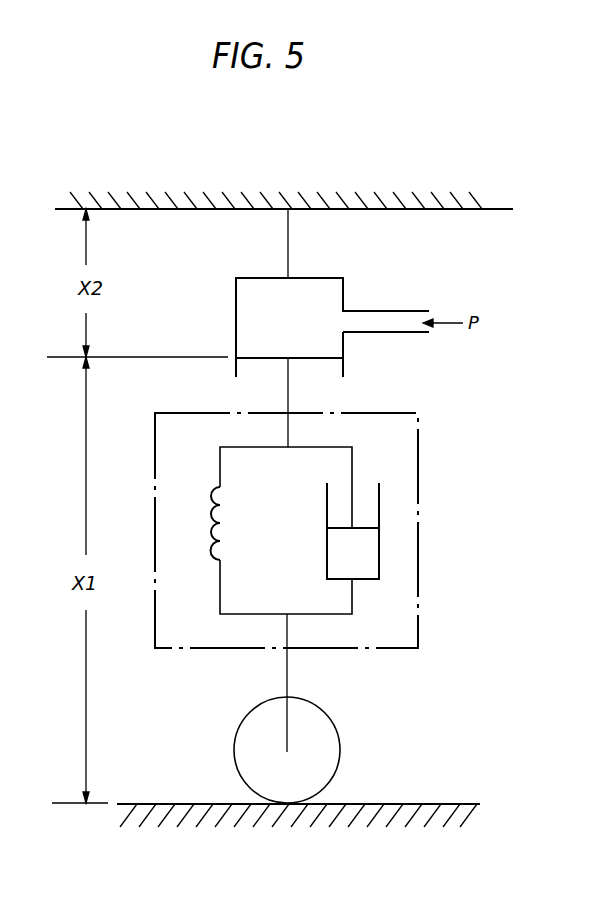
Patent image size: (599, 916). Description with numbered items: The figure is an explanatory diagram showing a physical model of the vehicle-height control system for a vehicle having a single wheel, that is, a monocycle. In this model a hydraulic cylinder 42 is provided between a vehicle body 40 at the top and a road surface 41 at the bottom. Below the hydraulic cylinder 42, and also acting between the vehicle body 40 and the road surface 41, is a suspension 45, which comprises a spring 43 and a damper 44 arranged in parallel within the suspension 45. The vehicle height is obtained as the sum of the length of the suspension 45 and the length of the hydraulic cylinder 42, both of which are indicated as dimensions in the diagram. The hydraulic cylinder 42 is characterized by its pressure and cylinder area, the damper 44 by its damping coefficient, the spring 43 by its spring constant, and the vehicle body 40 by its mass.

The vehicle body 40 is at (284, 176).
The road surface 41 is at (298, 839).
The hydraulic cylinder 42 is at (347, 291).
The spring 43 is at (207, 543).
The damper 44 is at (378, 560).
The suspension 45 is at (422, 558).